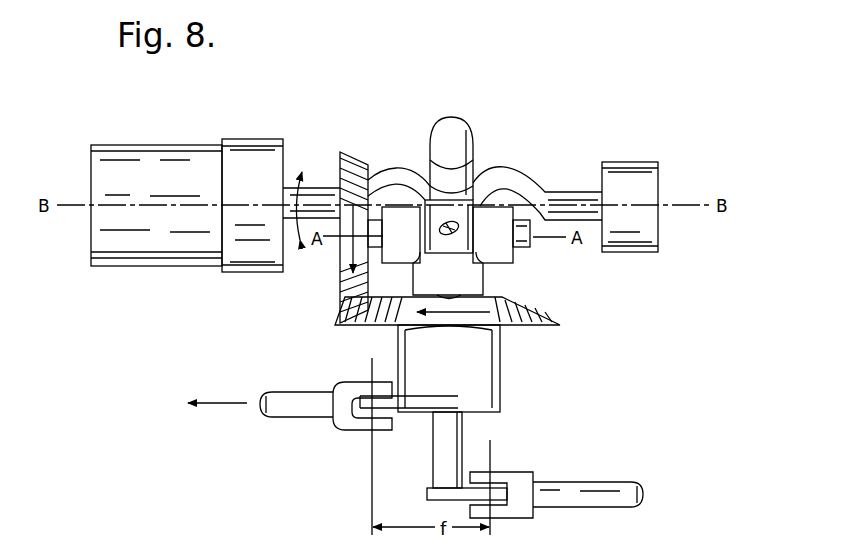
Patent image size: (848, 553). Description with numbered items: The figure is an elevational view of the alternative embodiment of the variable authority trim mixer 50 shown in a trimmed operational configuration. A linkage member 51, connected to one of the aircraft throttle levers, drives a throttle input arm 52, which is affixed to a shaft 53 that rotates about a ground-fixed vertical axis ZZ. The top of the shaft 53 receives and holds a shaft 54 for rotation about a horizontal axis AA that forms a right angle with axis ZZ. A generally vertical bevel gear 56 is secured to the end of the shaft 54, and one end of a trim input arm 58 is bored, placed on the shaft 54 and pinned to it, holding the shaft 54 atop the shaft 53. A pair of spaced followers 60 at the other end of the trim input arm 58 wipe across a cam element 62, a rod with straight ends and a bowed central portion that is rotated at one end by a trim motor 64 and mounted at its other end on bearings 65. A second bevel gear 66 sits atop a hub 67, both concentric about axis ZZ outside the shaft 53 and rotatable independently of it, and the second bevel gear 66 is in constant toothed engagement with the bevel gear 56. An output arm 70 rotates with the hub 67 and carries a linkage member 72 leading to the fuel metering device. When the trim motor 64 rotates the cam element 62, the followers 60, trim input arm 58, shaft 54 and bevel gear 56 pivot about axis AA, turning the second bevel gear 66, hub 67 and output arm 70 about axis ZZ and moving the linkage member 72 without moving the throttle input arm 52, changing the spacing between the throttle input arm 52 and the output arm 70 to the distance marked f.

The variable authority trim mixer 50 is at (243, 339).
The linkage member 51 is at (607, 492).
The throttle input arm 52 is at (462, 494).
The shaft 53 is at (455, 438).
The shaft 54 is at (532, 250).
The bevel gear 56 is at (353, 177).
The trim input arm 58 is at (470, 196).
The followers 60 is at (466, 135).
The cam element 62 is at (540, 197).
The trim motor 64 is at (163, 156).
The bearings 65 is at (660, 165).
The second bevel gear 66 is at (557, 328).
The hub 67 is at (502, 373).
The output arm 70 is at (438, 398).
The linkage member 72 is at (300, 400).